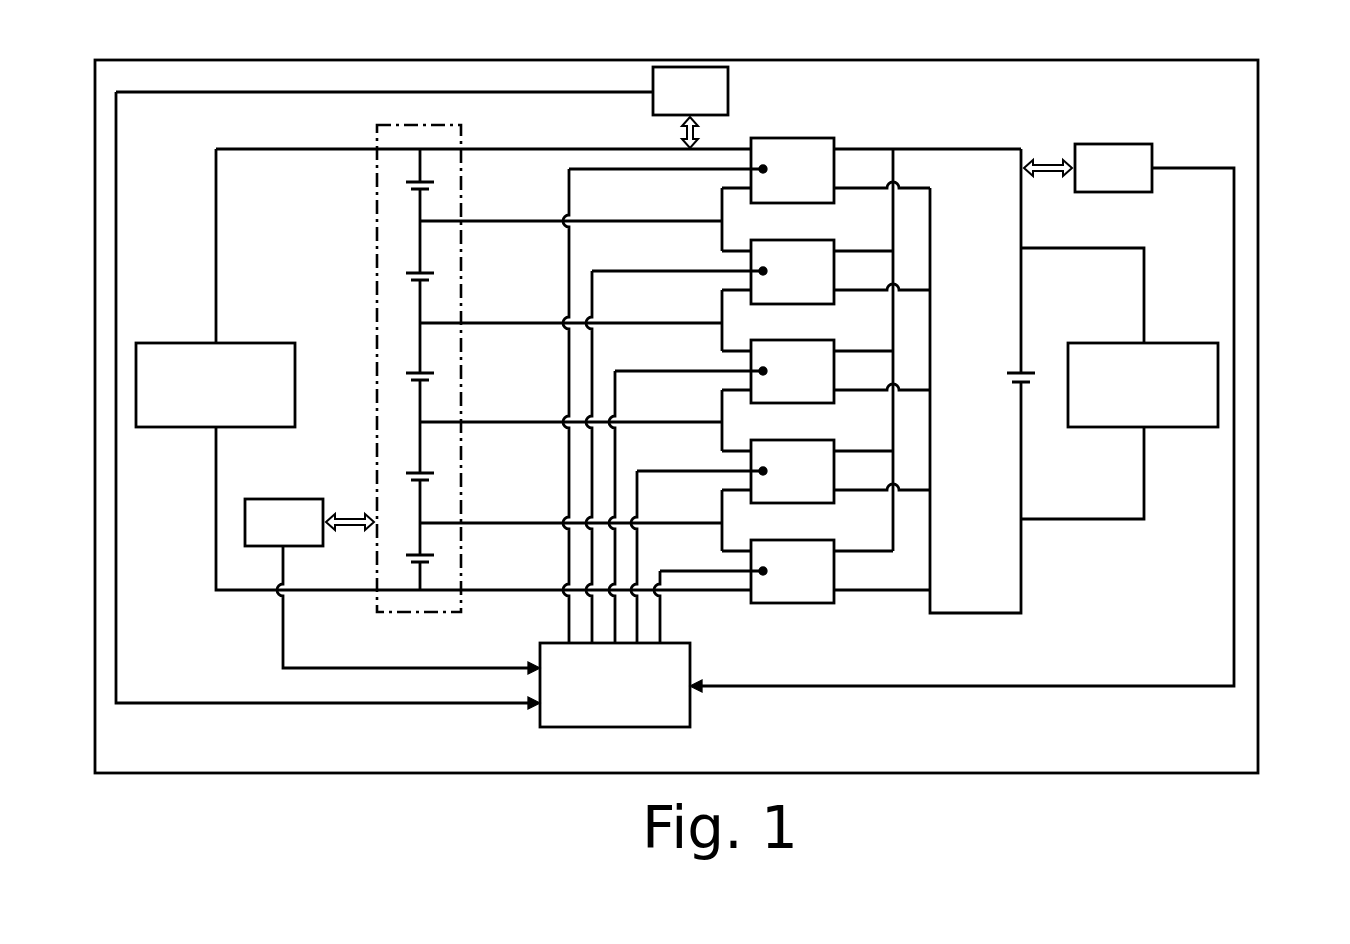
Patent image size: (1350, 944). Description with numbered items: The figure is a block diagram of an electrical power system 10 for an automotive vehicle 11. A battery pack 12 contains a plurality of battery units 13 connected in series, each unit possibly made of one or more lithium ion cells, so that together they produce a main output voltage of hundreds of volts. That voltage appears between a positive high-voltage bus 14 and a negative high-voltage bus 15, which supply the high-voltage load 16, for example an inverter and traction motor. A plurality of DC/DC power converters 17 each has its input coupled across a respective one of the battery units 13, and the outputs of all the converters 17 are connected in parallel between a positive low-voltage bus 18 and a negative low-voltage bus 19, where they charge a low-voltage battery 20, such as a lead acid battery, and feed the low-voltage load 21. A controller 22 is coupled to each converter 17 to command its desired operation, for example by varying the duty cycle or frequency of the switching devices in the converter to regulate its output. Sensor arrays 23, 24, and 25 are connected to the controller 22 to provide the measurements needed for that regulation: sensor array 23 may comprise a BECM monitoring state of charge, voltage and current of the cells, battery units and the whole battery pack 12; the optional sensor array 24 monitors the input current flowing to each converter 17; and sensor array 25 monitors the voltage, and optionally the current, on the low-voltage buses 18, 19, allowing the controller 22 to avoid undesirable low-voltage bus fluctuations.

The electrical power system 10 is at (940, 722).
The automotive vehicle 11 is at (1262, 215).
The battery pack 12 is at (376, 130).
The battery unit 13 is at (426, 181).
The positive high-voltage bus 14 is at (283, 153).
The negative high-voltage bus 15 is at (234, 592).
The high-voltage load 16 is at (258, 343).
The DC/DC power converter 17 is at (836, 138).
The positive low-voltage bus 18 is at (993, 148).
The negative low-voltage bus 19 is at (978, 612).
The low-voltage battery 20 is at (1016, 370).
The low-voltage load 21 is at (1188, 343).
The controller 22 is at (634, 727).
The sensor array 23 is at (392, 586).
The sensor array 24 is at (422, 388).
The sensor array 25 is at (962, 418).